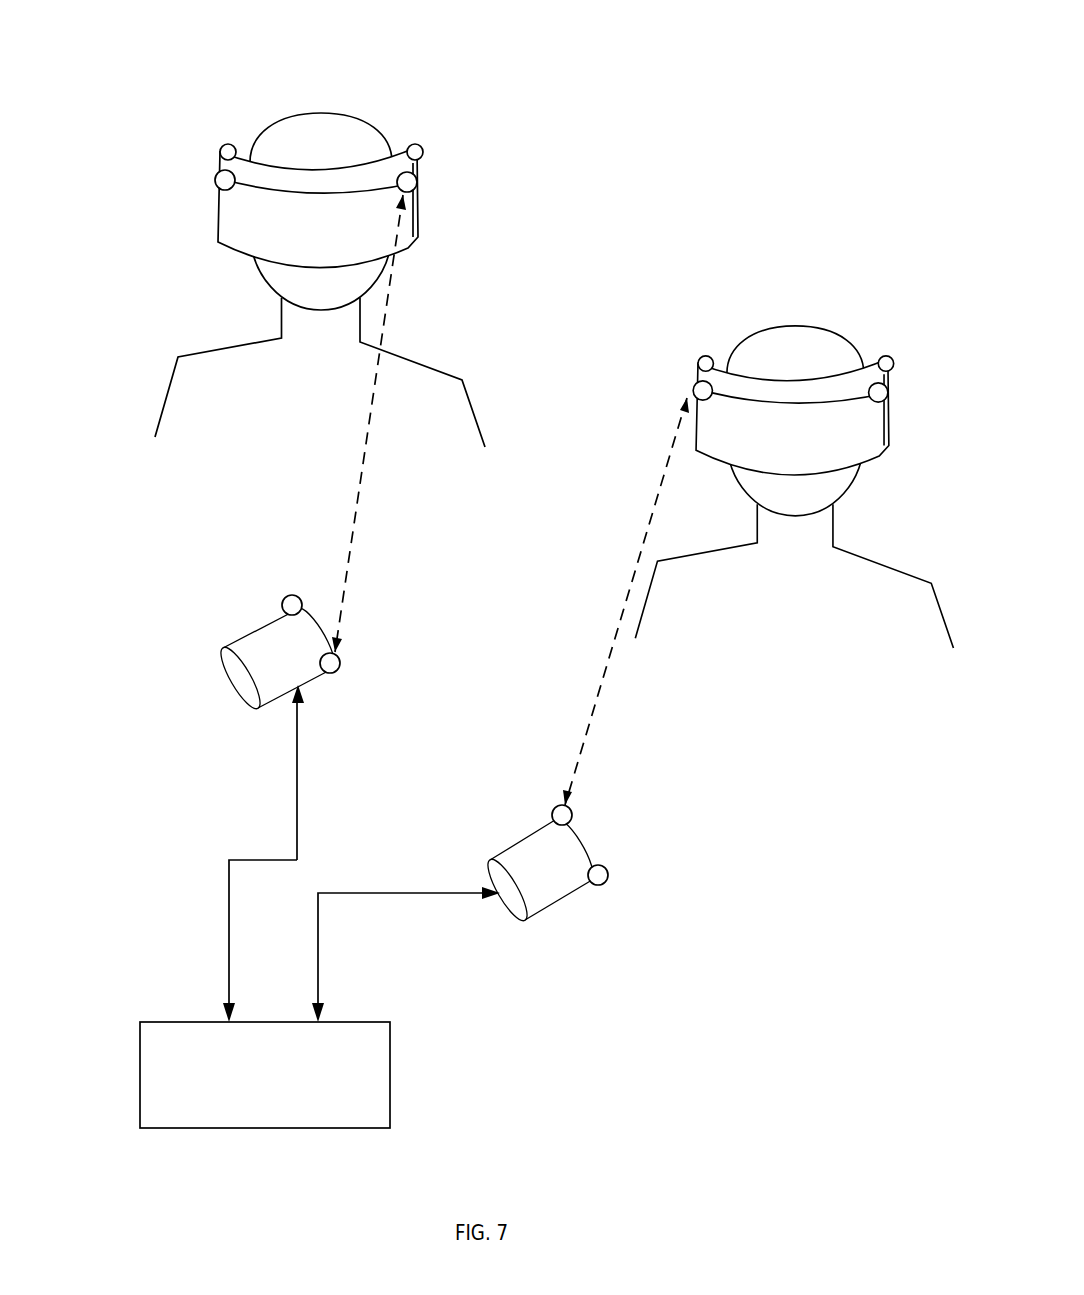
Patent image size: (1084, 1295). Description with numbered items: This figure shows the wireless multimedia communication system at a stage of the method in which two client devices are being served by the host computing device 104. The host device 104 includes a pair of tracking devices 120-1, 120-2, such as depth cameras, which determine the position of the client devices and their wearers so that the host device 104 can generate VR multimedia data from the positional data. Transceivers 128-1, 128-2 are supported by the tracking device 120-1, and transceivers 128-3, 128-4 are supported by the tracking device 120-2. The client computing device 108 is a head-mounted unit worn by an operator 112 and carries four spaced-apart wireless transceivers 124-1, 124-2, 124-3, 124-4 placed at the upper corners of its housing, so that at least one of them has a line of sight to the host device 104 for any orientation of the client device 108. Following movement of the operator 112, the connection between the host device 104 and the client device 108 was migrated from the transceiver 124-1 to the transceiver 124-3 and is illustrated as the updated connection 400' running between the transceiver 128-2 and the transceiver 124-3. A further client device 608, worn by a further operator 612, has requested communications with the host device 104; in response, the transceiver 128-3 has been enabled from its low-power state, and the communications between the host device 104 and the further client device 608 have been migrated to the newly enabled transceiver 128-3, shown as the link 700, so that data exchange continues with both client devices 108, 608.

The host computing device 104 is at (170, 903).
The client computing device 108 is at (204, 220).
The operator 112 is at (290, 123).
The tracking device 120-1 is at (253, 627).
The tracking device 120-2 is at (512, 847).
The wireless transceiver 124-1 is at (215, 180).
The wireless transceiver 124-2 is at (221, 152).
The wireless transceiver 124-3 is at (417, 182).
The wireless transceiver 124-4 is at (416, 150).
The transceiver 128-1 is at (291, 596).
The transceiver 128-2 is at (332, 673).
The transceiver 128-3 is at (572, 817).
The transceiver 128-4 is at (608, 873).
The updated connection 400' is at (372, 423).
The further client device 608 is at (795, 372).
The further operator 612 is at (770, 322).
The line of sight to second headset 700 is at (626, 601).